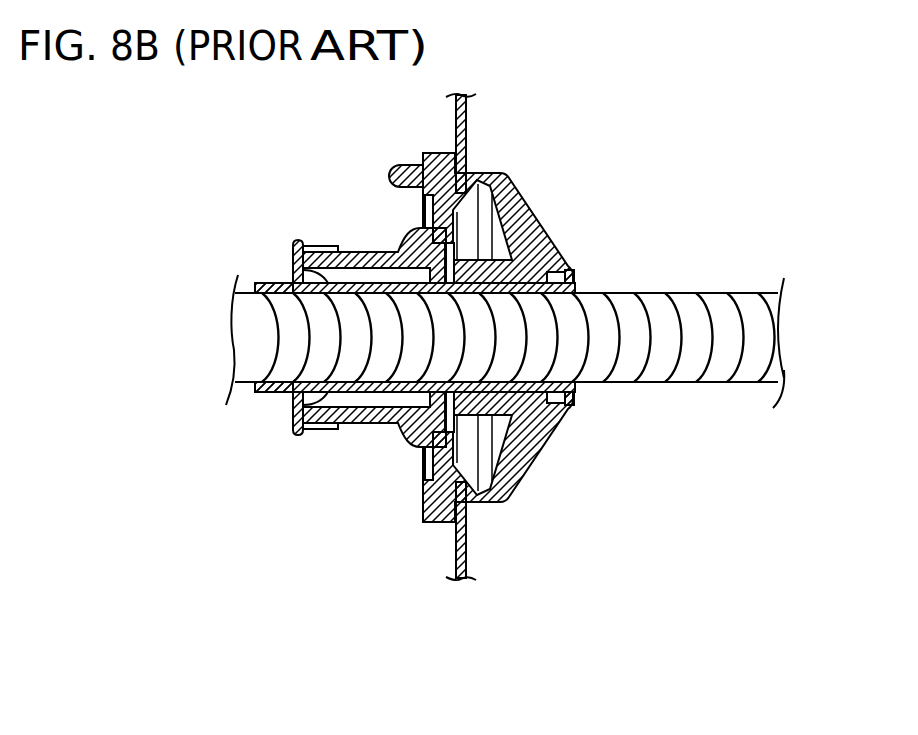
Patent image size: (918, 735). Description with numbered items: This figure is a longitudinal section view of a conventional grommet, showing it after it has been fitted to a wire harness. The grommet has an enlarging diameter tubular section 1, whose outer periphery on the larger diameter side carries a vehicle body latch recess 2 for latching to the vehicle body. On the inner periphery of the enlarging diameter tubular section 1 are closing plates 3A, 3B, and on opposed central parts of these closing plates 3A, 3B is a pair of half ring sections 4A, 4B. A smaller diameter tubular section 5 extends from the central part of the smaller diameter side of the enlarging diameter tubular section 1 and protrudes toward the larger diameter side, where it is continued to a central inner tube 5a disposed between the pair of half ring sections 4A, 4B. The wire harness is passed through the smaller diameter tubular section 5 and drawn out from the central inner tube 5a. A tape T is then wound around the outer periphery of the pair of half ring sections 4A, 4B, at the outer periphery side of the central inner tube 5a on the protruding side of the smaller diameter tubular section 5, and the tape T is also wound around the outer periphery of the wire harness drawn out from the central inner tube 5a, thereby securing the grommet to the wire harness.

The enlarging diameter tubular section 1 is at (518, 195).
The vehicle body latch recess 2 is at (464, 165).
The closing plate 3A is at (427, 196).
The closing plate 3B is at (427, 470).
The half ring section 4A is at (358, 250).
The half ring section 4B is at (357, 423).
The smaller diameter tubular section 5 is at (575, 398).
The central inner tube 5a is at (292, 283).
The tape T is at (296, 240).